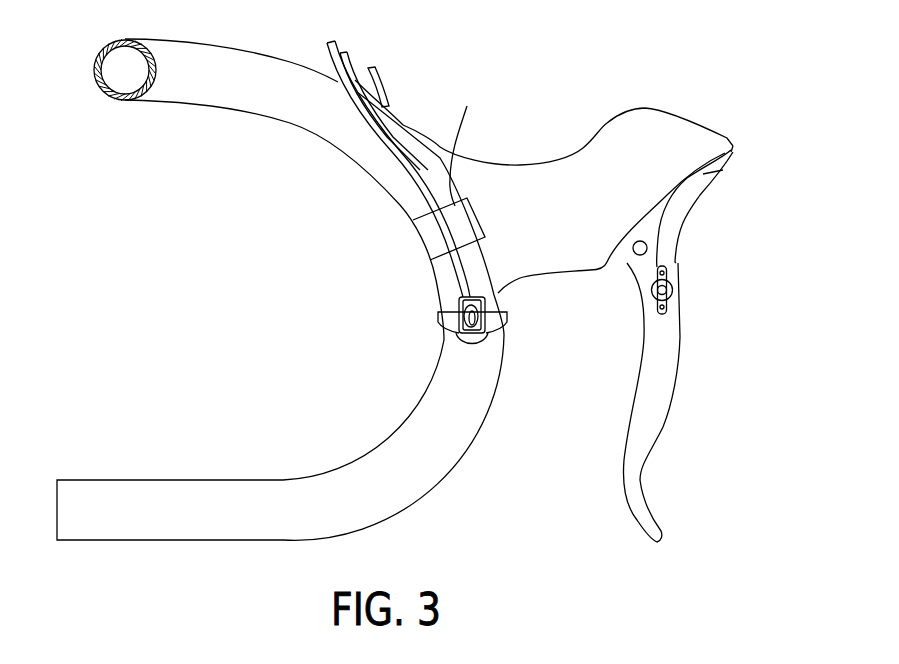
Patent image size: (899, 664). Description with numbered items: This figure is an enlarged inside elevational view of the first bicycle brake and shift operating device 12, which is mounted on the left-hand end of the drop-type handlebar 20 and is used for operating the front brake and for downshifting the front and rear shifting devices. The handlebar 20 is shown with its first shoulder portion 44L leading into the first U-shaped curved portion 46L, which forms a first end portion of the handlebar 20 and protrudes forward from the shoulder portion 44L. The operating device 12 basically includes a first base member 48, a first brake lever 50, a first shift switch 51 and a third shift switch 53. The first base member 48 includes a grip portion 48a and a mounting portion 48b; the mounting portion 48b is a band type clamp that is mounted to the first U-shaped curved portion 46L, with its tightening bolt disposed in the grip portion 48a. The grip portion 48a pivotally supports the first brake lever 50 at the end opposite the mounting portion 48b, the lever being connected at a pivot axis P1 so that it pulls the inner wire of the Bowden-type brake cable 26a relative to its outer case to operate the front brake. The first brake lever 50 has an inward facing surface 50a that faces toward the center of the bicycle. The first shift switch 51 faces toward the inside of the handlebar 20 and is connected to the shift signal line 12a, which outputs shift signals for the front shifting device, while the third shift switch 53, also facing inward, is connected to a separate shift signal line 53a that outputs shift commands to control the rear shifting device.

The first bicycle brake and shift operating device 12 is at (695, 95).
The shift signal line 12a is at (351, 65).
The handlebar 20 is at (222, 115).
The brake cable 26a is at (385, 91).
The first shoulder portion 44L is at (95, 60).
The first U-shaped curved portion 46L is at (380, 445).
The first base member 48 is at (562, 85).
The grip portion 48a is at (517, 164).
The mounting portion 48b is at (409, 169).
The first brake lever 50 is at (667, 427).
The inward facing surface 50a is at (653, 366).
The first shift switch 51 is at (670, 293).
The third shift switch 53 is at (460, 327).
The shift signal line 53a is at (412, 176).
The pivot axis P1 is at (647, 245).